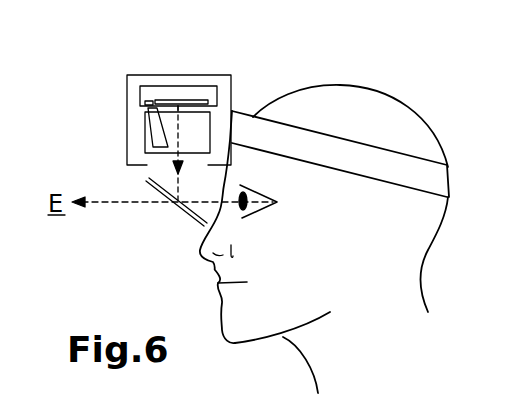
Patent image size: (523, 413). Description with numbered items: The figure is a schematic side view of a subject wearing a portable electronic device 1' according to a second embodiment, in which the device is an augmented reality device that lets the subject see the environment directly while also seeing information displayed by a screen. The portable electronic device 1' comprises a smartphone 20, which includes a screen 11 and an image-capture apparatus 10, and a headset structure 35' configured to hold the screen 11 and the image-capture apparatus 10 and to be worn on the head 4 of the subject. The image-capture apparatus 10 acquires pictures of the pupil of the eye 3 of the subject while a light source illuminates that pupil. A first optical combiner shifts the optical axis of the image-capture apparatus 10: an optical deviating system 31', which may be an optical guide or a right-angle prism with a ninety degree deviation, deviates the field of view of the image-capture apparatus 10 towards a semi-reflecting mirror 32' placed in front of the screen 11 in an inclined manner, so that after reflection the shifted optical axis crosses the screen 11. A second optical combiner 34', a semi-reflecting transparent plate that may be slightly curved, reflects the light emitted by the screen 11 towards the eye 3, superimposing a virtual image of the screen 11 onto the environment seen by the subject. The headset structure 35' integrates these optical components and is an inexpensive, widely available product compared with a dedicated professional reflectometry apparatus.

The portable electronic device 1' is at (152, 129).
The eye 3 is at (241, 214).
The head 4 is at (448, 217).
The image-capture apparatus 10 is at (146, 100).
The screen 11 is at (200, 116).
The smartphone 20 is at (197, 84).
The optical deviating system 31' is at (128, 109).
The semi-reflecting mirror 32' is at (101, 125).
The second optical combiner 34' is at (163, 217).
The headset structure 35' is at (159, 88).